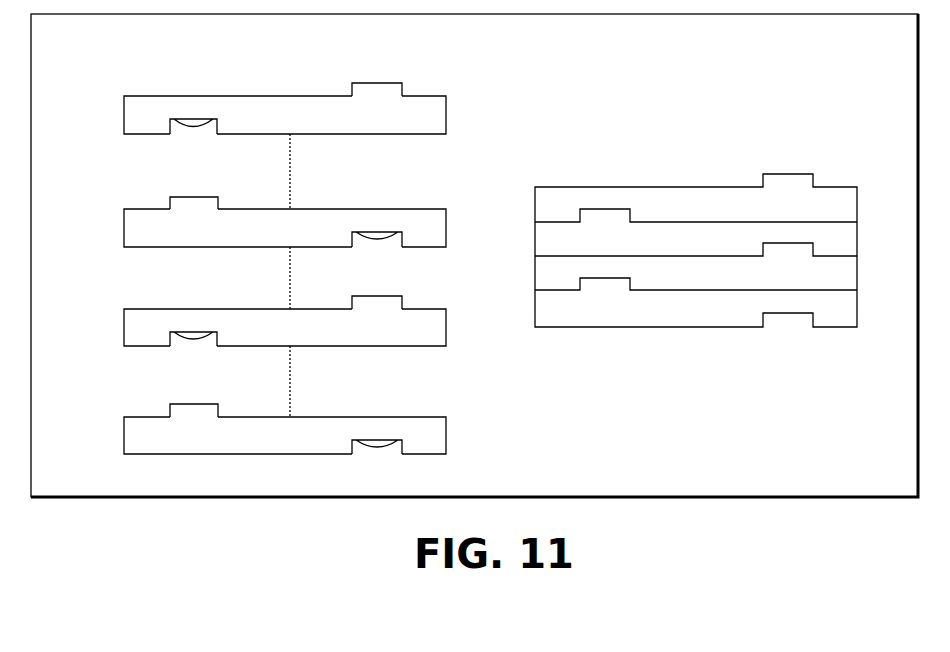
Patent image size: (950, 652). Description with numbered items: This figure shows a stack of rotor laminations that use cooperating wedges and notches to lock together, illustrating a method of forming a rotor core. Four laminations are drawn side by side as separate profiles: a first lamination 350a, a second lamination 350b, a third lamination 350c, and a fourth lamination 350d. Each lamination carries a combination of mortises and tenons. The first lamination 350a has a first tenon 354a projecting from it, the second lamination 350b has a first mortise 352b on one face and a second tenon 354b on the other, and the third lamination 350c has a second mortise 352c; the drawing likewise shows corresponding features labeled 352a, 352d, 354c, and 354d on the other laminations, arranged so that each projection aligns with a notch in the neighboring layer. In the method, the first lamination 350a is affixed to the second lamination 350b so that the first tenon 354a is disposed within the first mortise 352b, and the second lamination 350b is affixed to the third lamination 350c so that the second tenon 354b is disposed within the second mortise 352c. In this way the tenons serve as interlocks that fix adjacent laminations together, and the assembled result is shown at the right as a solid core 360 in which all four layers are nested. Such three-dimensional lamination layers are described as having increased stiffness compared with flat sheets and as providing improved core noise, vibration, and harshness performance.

The first lamination 350a is at (268, 406).
The second lamination 350b is at (267, 304).
The third lamination 350c is at (268, 199).
The fourth lamination 350d is at (267, 91).
The recess of first layer 352a is at (398, 440).
The first mortise 352b is at (206, 332).
The second mortise 352c is at (398, 232).
The recess of fourth layer 352d is at (213, 121).
The first tenon 354a is at (197, 404).
The second tenon 354b is at (378, 296).
The projection of third layer 354c is at (197, 197).
The projection of fourth layer 354d is at (380, 83).
The solid core 360 is at (714, 142).